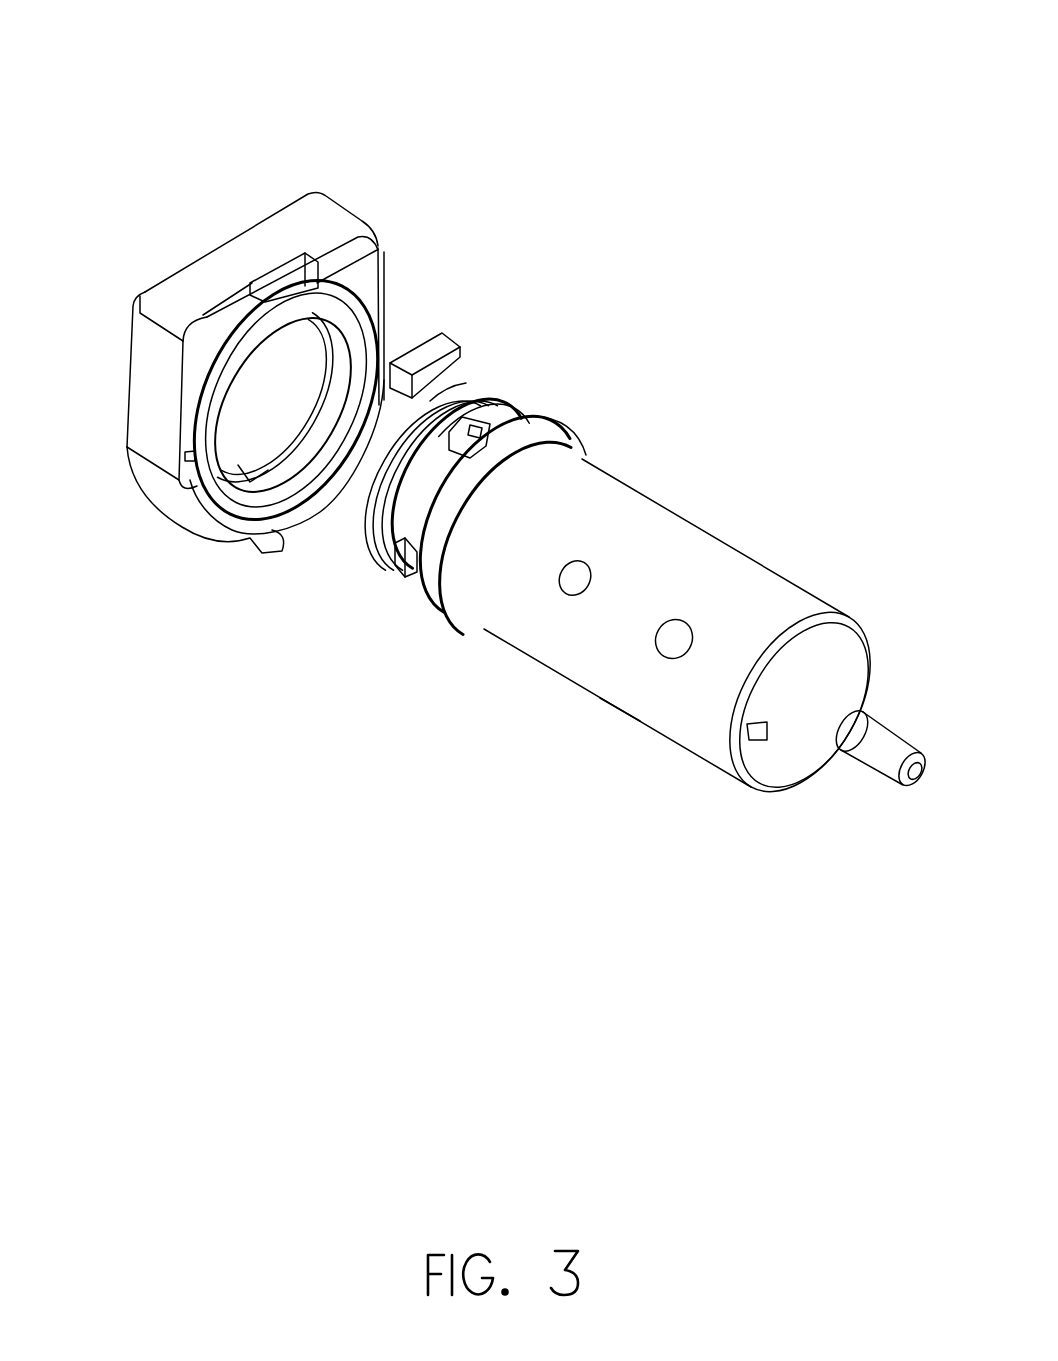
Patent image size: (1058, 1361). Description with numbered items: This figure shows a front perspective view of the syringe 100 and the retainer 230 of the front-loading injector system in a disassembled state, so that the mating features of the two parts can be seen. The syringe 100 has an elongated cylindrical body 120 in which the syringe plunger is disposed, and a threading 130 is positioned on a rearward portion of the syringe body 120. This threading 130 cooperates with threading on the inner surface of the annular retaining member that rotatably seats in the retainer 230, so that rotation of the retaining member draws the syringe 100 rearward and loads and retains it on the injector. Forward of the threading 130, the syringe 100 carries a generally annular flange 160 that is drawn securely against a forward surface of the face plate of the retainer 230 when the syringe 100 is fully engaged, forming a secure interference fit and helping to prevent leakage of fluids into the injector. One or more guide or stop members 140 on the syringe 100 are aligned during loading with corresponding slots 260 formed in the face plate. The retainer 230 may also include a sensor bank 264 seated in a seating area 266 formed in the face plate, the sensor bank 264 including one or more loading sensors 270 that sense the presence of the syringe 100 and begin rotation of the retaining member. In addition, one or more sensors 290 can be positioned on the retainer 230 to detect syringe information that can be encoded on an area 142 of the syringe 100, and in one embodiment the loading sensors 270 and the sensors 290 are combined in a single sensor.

The syringe 100 is at (673, 752).
The elongated cylindrical body 120 is at (688, 518).
The threading 130 is at (375, 572).
The guide or stop member 140 is at (495, 415).
The area 142 is at (537, 417).
The annular flange 160 is at (450, 632).
The retainer 230 is at (148, 408).
The slot 260 is at (380, 248).
The sensor bank 264 is at (460, 330).
The seating area 266 is at (280, 283).
The loading sensor 270 is at (450, 383).
The sensor 290 is at (367, 458).